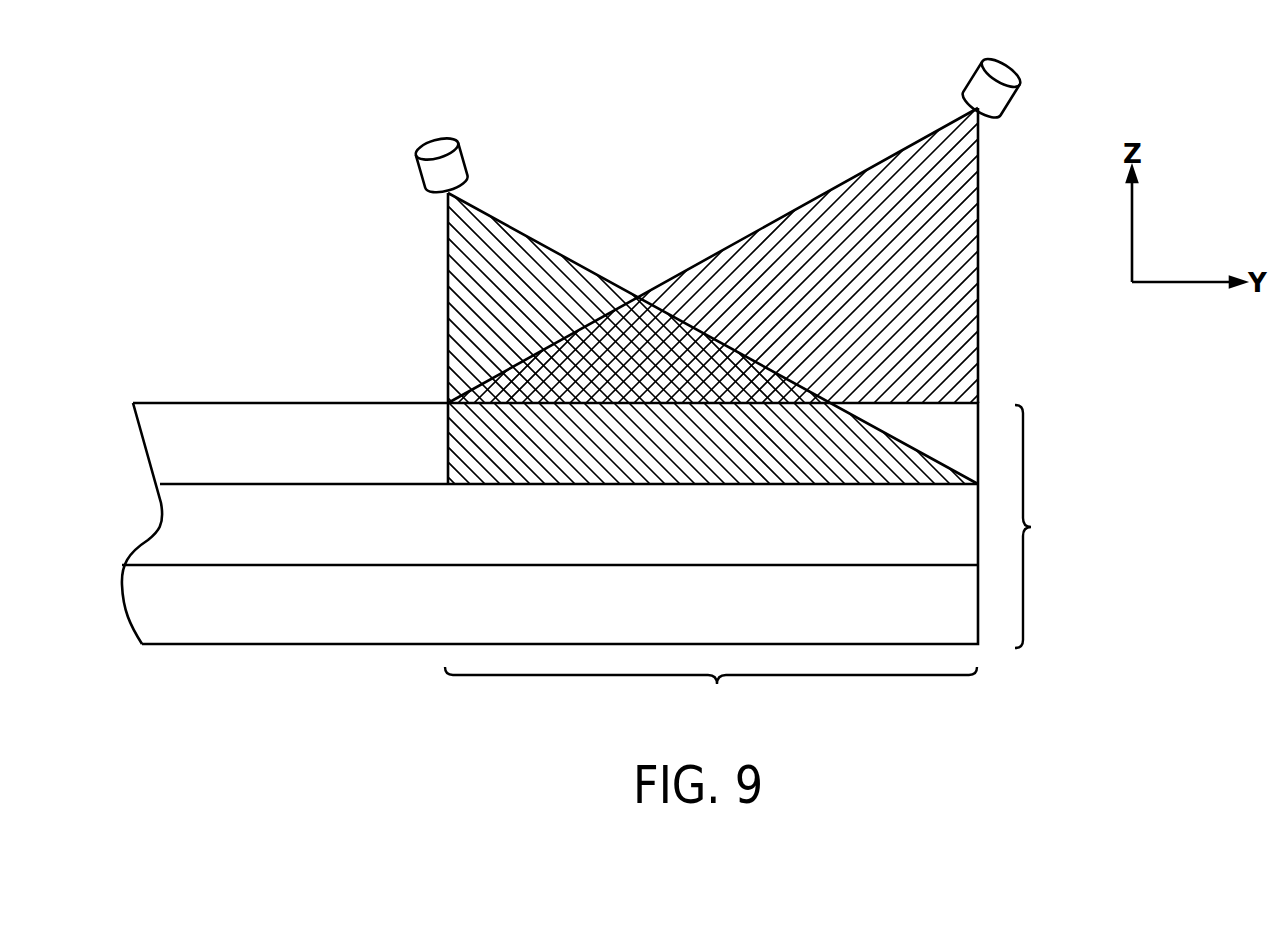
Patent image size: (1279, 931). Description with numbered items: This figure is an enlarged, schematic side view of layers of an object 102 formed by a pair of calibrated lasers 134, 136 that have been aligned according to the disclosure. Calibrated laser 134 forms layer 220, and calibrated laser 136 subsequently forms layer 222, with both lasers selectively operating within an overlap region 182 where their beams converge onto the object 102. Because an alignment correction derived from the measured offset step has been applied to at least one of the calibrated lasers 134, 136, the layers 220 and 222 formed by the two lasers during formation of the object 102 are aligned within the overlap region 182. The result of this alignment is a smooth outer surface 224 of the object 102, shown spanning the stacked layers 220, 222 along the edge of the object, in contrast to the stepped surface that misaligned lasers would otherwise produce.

The object 102 is at (916, 654).
The calibrated laser 134 is at (983, 86).
The calibrated laser 136 is at (435, 169).
The overlap region 182 is at (711, 694).
The layer 220 is at (272, 456).
The layer 222 is at (263, 546).
The smooth outer surface 224 is at (1050, 526).